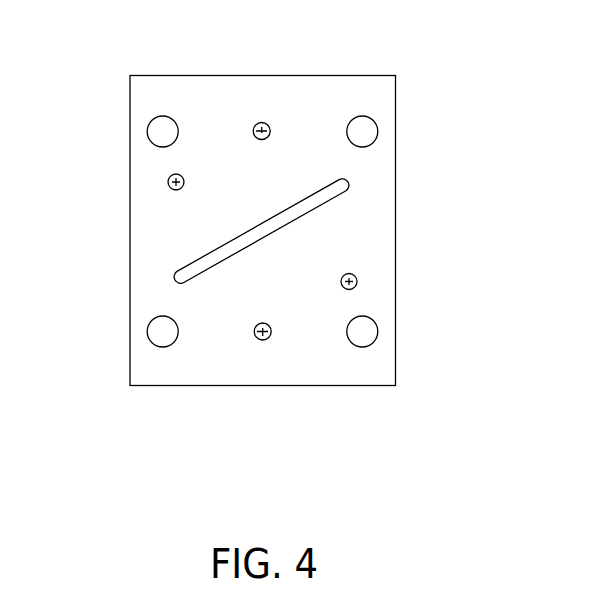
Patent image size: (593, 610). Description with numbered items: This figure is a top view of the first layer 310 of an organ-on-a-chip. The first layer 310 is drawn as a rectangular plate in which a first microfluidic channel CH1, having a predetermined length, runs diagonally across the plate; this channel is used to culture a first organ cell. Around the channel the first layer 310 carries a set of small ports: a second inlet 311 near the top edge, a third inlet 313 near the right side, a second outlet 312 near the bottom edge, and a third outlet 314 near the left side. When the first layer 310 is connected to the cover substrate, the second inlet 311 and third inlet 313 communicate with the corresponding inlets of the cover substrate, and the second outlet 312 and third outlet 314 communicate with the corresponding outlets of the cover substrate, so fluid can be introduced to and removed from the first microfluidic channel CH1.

The first layer 310 is at (345, 76).
The second inlet 311 is at (262, 122).
The second outlet 312 is at (263, 340).
The third inlet 313 is at (357, 280).
The third outlet 314 is at (168, 182).
The first microfluidic channel CH1 is at (324, 194).